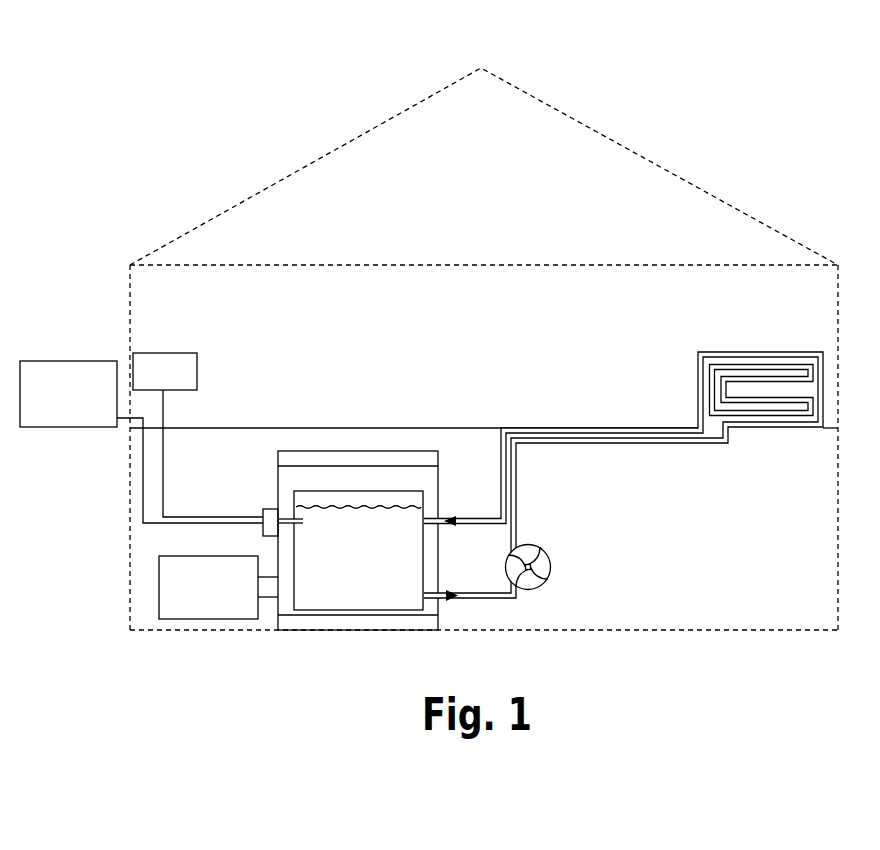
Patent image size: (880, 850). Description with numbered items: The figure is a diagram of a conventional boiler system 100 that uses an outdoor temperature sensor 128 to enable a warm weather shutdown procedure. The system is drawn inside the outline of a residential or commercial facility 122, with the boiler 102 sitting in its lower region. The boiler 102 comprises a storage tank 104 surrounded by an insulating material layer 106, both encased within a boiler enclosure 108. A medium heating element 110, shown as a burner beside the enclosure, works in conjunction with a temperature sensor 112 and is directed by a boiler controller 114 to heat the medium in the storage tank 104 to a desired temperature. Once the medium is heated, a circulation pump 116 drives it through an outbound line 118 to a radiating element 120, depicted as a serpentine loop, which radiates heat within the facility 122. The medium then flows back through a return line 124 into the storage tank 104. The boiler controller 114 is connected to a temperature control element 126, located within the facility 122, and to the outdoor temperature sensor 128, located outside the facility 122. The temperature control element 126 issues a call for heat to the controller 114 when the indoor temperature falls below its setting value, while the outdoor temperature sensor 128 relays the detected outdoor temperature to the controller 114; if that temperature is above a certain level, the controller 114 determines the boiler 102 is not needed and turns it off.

The boiler system 100 is at (137, 68).
The boiler 102 is at (259, 452).
The storage tank 104 is at (362, 491).
The insulating material layer 106 is at (441, 559).
The boiler enclosure 108 is at (375, 451).
The medium heating element 110 is at (218, 587).
The temperature sensor 112 is at (303, 523).
The boiler controller 114 is at (264, 509).
The circulation pump 116 is at (545, 587).
The outbound line 118 is at (517, 495).
The radiating element 120 is at (696, 364).
The residential or commercial facility 122 is at (128, 283).
The return line 124 is at (500, 452).
The temperature control element 126 is at (199, 376).
The outdoor temperature sensor 128 is at (71, 361).